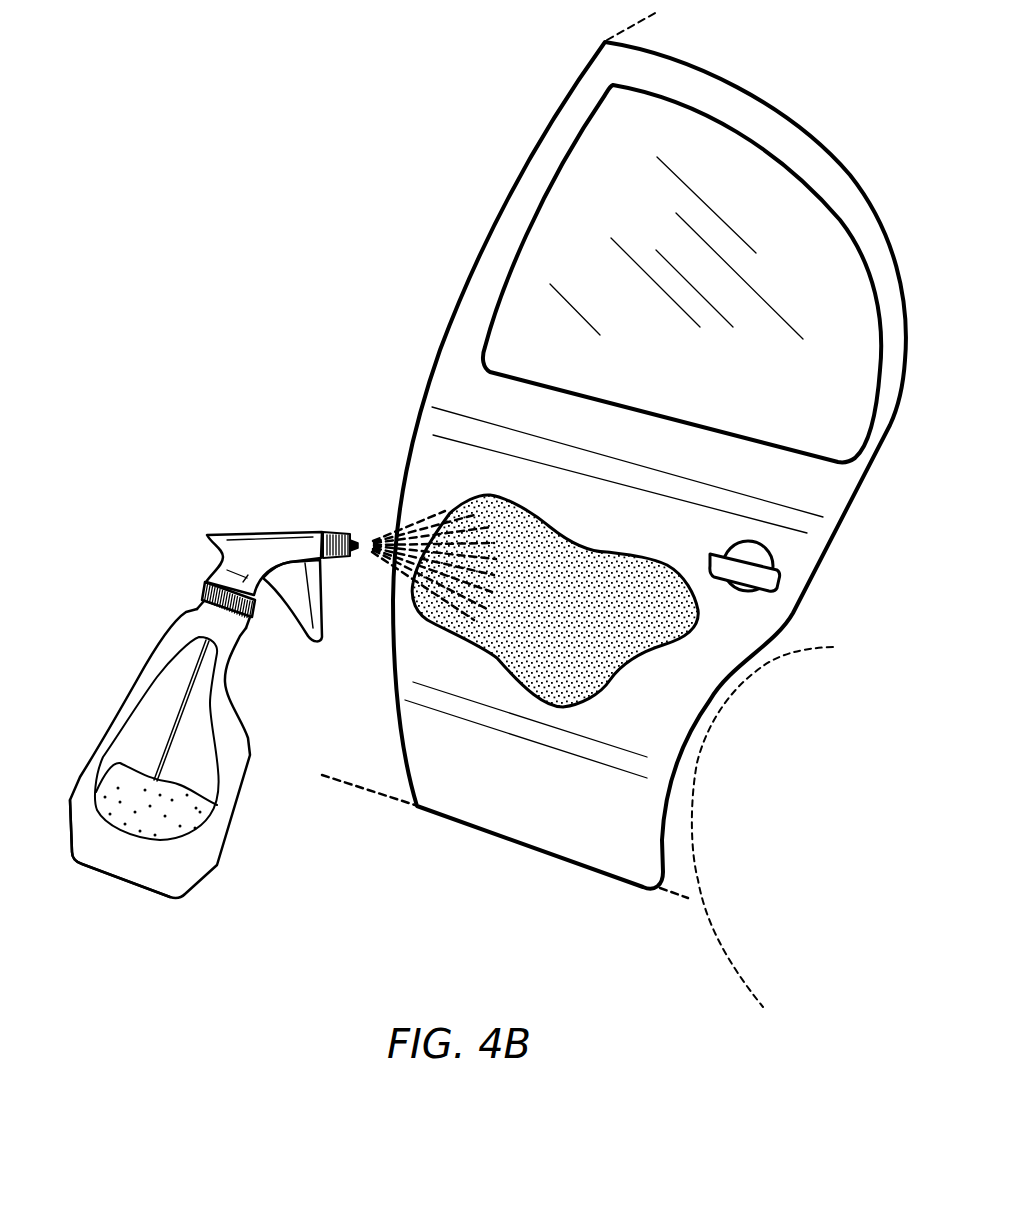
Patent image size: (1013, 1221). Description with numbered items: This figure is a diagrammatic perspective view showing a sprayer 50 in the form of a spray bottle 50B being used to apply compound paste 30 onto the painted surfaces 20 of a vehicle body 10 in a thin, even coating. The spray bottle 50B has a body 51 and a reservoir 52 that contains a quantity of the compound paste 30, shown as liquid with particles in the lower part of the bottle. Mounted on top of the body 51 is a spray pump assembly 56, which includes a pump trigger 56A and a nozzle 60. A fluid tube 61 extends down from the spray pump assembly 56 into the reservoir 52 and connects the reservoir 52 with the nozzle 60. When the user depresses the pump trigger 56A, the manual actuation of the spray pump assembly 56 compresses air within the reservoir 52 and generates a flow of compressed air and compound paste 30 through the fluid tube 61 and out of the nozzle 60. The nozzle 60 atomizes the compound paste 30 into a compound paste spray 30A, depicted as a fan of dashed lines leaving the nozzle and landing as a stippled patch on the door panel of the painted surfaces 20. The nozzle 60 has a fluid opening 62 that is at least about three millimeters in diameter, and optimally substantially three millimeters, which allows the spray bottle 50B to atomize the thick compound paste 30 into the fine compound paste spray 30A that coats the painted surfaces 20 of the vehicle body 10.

The vehicle body 10 is at (400, 798).
The painted surfaces 20 is at (823, 483).
The compound paste 30 is at (193, 817).
The compound paste spray 30A is at (435, 512).
The sprayer 50 is at (142, 740).
The spray bottle 50B is at (85, 848).
The body 51 is at (162, 642).
The reservoir 52 is at (152, 707).
The spray pump assembly 56 is at (292, 572).
The pump trigger 56A is at (302, 620).
The nozzle 60 is at (340, 532).
The fluid tube 61 is at (163, 750).
The fluid opening 62 is at (356, 532).